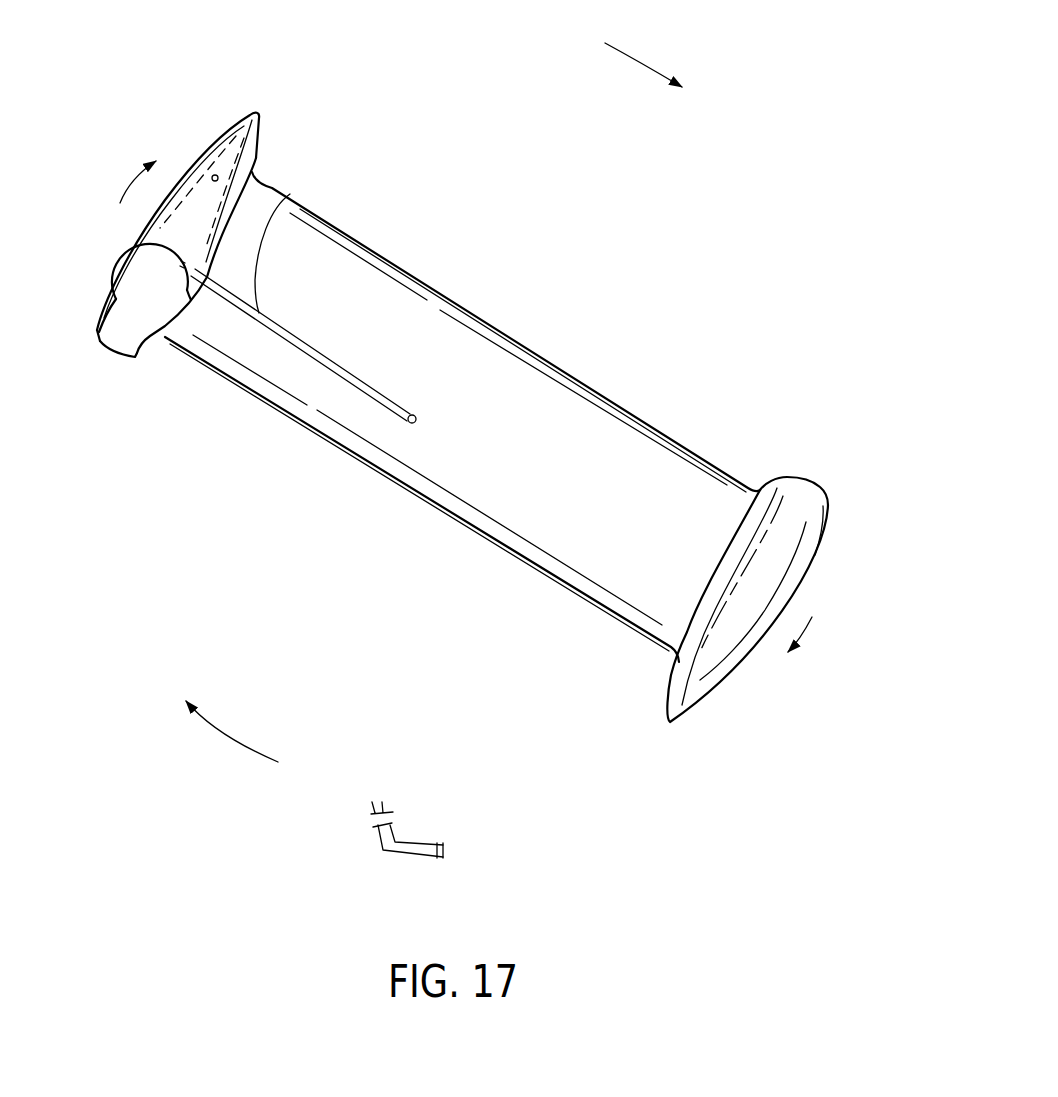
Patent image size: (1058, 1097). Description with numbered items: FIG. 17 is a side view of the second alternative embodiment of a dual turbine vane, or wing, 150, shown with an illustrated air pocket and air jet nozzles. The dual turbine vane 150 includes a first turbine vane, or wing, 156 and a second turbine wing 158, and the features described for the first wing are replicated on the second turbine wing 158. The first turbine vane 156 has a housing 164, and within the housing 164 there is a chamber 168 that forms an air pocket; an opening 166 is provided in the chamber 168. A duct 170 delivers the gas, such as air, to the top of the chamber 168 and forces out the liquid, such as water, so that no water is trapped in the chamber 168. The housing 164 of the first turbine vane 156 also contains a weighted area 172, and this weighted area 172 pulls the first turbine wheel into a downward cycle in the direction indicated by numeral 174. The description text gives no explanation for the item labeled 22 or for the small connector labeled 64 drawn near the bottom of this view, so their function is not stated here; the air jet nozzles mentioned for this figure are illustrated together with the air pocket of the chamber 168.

The optical fiber / rod 22 is at (466, 422).
The connector 64 is at (405, 831).
The dual turbine vane 150 is at (542, 303).
The first turbine vane 156 is at (207, 226).
The second turbine wing 158 is at (752, 617).
The housing 164 is at (97, 322).
The opening 166 is at (110, 347).
The chamber 168 is at (164, 300).
The duct 170 is at (278, 198).
The weighted area 172 is at (213, 176).
The downward cycle 174 is at (634, 53).